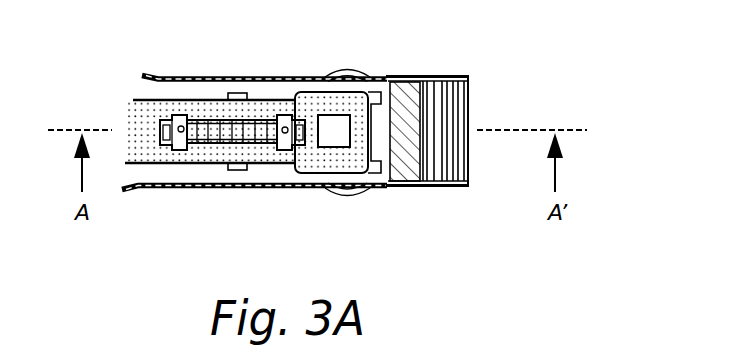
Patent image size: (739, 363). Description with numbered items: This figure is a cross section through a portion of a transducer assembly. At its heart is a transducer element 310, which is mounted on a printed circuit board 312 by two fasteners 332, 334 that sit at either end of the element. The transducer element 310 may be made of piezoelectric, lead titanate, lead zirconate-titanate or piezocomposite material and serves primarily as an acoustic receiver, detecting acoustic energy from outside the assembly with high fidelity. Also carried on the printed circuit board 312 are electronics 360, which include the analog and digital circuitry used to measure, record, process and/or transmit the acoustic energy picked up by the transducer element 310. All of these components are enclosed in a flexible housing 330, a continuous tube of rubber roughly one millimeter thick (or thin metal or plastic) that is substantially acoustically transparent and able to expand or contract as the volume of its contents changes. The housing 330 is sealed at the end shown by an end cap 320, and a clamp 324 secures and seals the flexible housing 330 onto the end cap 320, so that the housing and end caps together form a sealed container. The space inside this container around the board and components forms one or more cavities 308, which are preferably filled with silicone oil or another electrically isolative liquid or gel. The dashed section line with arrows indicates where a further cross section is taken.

The cavity 308 is at (160, 96).
The transducer element 310 is at (200, 127).
The printed circuit board 312 is at (317, 100).
The end cap 320 is at (408, 95).
The clamp 324 is at (440, 175).
The flexible housing 330 is at (218, 188).
The fastener 332 is at (172, 150).
The fastener 334 is at (283, 150).
The electronics 360 is at (340, 133).